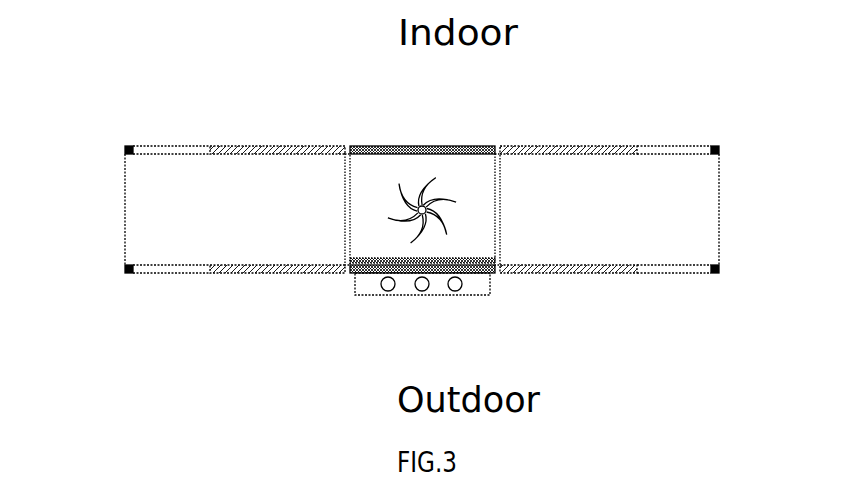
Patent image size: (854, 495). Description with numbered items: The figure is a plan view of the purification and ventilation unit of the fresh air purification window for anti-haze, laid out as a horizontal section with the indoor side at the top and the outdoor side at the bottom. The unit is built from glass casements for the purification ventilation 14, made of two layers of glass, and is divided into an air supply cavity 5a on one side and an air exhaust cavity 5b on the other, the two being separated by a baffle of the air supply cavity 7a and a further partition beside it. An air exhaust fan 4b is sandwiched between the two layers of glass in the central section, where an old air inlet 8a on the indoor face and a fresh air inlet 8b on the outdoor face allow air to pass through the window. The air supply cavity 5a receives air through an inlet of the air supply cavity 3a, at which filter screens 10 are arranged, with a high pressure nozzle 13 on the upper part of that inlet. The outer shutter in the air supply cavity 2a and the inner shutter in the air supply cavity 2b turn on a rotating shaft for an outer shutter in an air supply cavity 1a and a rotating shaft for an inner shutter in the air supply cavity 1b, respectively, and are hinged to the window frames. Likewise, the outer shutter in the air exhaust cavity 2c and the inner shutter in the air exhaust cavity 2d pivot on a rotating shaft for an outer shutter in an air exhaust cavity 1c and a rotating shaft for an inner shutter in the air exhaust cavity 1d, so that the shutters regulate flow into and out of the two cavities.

The rotating shaft for an outer shutter in an air supply cavity 1a is at (125, 267).
The rotating shaft for an inner shutter in the air supply cavity 1b is at (125, 148).
The rotating shaft for an outer shutter in an air exhaust cavity 1c is at (719, 265).
The rotating shaft for an inner shutter in the air exhaust cavity 1d is at (718, 148).
The outer shutter in the air supply cavity 2a is at (168, 270).
The inner shutter in the air supply cavity 2b is at (172, 150).
The outer shutter in the air exhaust cavity 2c is at (673, 270).
The inner shutter in the air exhaust cavity 2d is at (673, 150).
The inlet of the air supply cavity 3a is at (510, 158).
The air exhaust fan 4b is at (420, 214).
The air supply cavity 5a is at (162, 208).
The air exhaust cavity 5b is at (577, 232).
The baffle of the air supply cavity 7a is at (347, 158).
The old air inlet 8a is at (453, 152).
The fresh air inlet 8b is at (490, 270).
The filter screens 10 is at (348, 272).
The high pressure nozzle 13 is at (422, 282).
The glass casements for the purification ventilation 14 is at (278, 265).